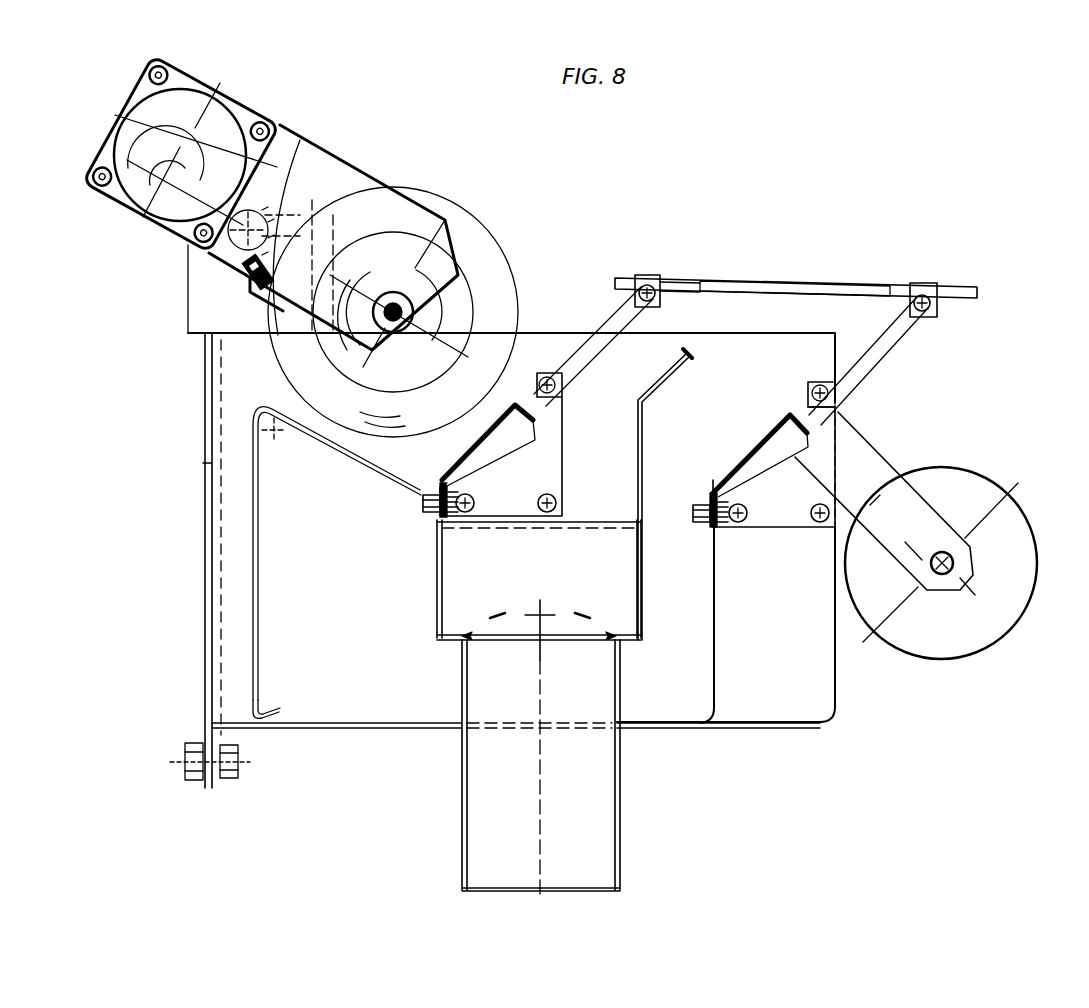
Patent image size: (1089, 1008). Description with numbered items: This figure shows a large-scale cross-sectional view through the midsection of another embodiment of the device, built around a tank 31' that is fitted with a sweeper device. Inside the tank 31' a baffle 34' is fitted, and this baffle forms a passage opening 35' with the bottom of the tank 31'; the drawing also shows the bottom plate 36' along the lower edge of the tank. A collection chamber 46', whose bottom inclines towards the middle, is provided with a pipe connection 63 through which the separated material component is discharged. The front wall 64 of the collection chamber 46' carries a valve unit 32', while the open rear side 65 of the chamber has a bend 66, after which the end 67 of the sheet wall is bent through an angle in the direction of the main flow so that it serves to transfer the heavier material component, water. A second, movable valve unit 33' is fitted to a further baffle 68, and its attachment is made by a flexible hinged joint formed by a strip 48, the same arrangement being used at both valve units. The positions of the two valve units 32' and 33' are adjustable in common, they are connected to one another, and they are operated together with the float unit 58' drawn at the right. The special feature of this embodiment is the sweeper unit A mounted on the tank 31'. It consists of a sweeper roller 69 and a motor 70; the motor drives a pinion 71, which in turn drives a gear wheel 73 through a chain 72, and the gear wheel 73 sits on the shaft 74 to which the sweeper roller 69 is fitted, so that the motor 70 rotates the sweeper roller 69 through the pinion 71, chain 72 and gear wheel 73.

The motor 70 is at (237, 110).
The pinion 71 is at (135, 215).
The chain 72 is at (277, 187).
The gear wheel 73 is at (467, 227).
The shaft 74 is at (398, 302).
The sweeper roller 69 is at (503, 266).
The sweeper unit A is at (163, 237).
The tank 31' is at (502, 560).
The valve unit 32' is at (546, 381).
The movable valve unit 33' is at (816, 390).
The baffle 34' is at (337, 553).
The passage opening 35' is at (271, 741).
The bottom plate 36' is at (516, 753).
The collection chamber 46' is at (637, 469).
The strip 48 is at (437, 477).
The float unit 58' is at (916, 566).
The pipe connection 63 is at (620, 690).
The front wall 64 is at (442, 580).
The open rear side 65 is at (642, 627).
The bend 66 is at (638, 402).
The end of the sheet wall 67 is at (690, 358).
The baffle 68 is at (715, 660).